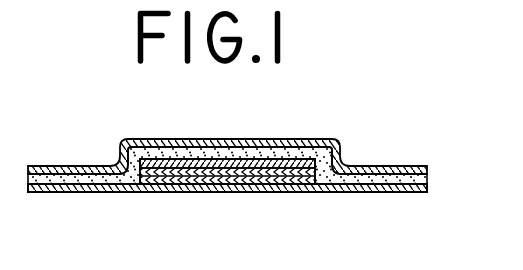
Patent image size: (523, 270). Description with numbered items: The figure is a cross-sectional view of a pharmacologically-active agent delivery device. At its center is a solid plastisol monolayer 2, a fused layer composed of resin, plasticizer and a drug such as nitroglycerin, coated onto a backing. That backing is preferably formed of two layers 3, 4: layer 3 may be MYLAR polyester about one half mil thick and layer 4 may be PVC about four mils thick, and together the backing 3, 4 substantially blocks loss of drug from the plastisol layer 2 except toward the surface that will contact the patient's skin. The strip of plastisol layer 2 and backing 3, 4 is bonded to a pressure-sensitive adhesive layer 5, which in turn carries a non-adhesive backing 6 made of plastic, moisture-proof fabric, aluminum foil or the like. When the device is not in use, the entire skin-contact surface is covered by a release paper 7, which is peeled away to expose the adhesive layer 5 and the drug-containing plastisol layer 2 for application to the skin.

The solid plastisol monolayer 2 is at (192, 190).
The backing layer 3 is at (168, 160).
The backing layer 4 is at (225, 165).
The pressure-sensitive adhesive layer 5 is at (253, 143).
The non-adhesive backing 6 is at (300, 150).
The release paper 7 is at (290, 191).